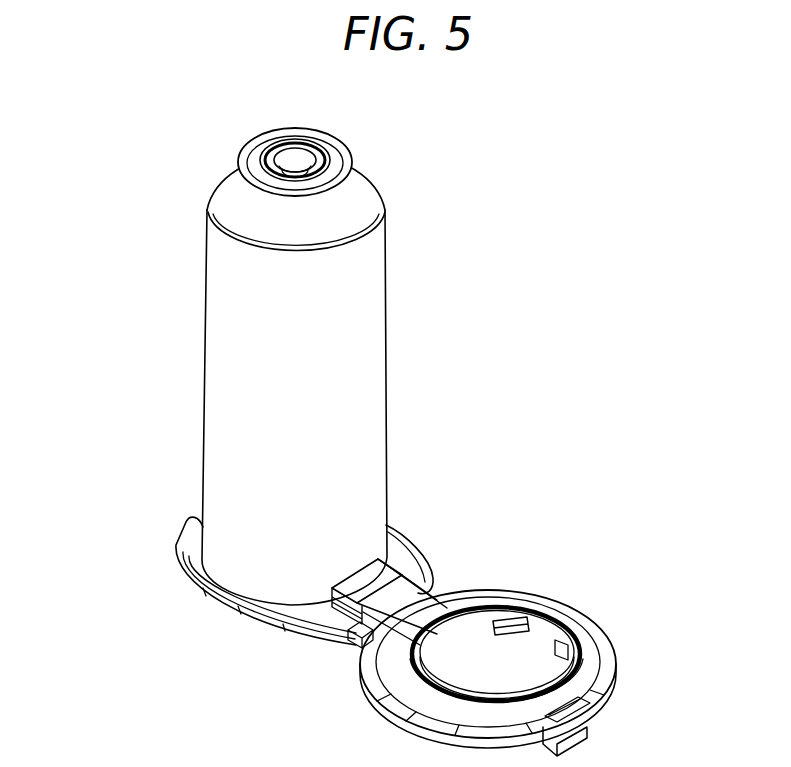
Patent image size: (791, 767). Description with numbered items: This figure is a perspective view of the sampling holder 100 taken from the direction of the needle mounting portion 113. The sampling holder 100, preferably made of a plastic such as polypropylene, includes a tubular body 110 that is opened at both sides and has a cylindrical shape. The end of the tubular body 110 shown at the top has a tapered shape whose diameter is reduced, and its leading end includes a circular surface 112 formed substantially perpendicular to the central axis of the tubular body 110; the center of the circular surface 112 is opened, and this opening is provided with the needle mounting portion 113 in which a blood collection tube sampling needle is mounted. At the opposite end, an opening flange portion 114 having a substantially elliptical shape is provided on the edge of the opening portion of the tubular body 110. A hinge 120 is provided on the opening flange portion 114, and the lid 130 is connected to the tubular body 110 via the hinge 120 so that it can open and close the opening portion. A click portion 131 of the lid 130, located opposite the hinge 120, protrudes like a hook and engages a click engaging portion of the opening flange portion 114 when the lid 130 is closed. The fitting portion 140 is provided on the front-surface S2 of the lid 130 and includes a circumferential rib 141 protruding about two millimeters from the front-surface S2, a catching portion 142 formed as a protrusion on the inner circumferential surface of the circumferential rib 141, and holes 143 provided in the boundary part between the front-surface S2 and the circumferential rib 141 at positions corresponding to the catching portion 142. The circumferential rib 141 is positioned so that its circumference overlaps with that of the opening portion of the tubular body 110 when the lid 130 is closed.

The sampling holder 100 is at (655, 161).
The tubular body 110 is at (386, 353).
The circular surface 112 is at (343, 157).
The needle mounting portion 113 is at (263, 150).
The opening flange portion 114 is at (186, 549).
The hinge 120 is at (343, 650).
The lid 130 is at (507, 635).
The click portion 131 is at (586, 743).
The fitting portion 140 is at (531, 608).
The circumferential rib 141 is at (423, 683).
The catching portion 142 is at (540, 610).
The hole 143 is at (508, 617).
The front-surface of the lid S2 is at (598, 663).